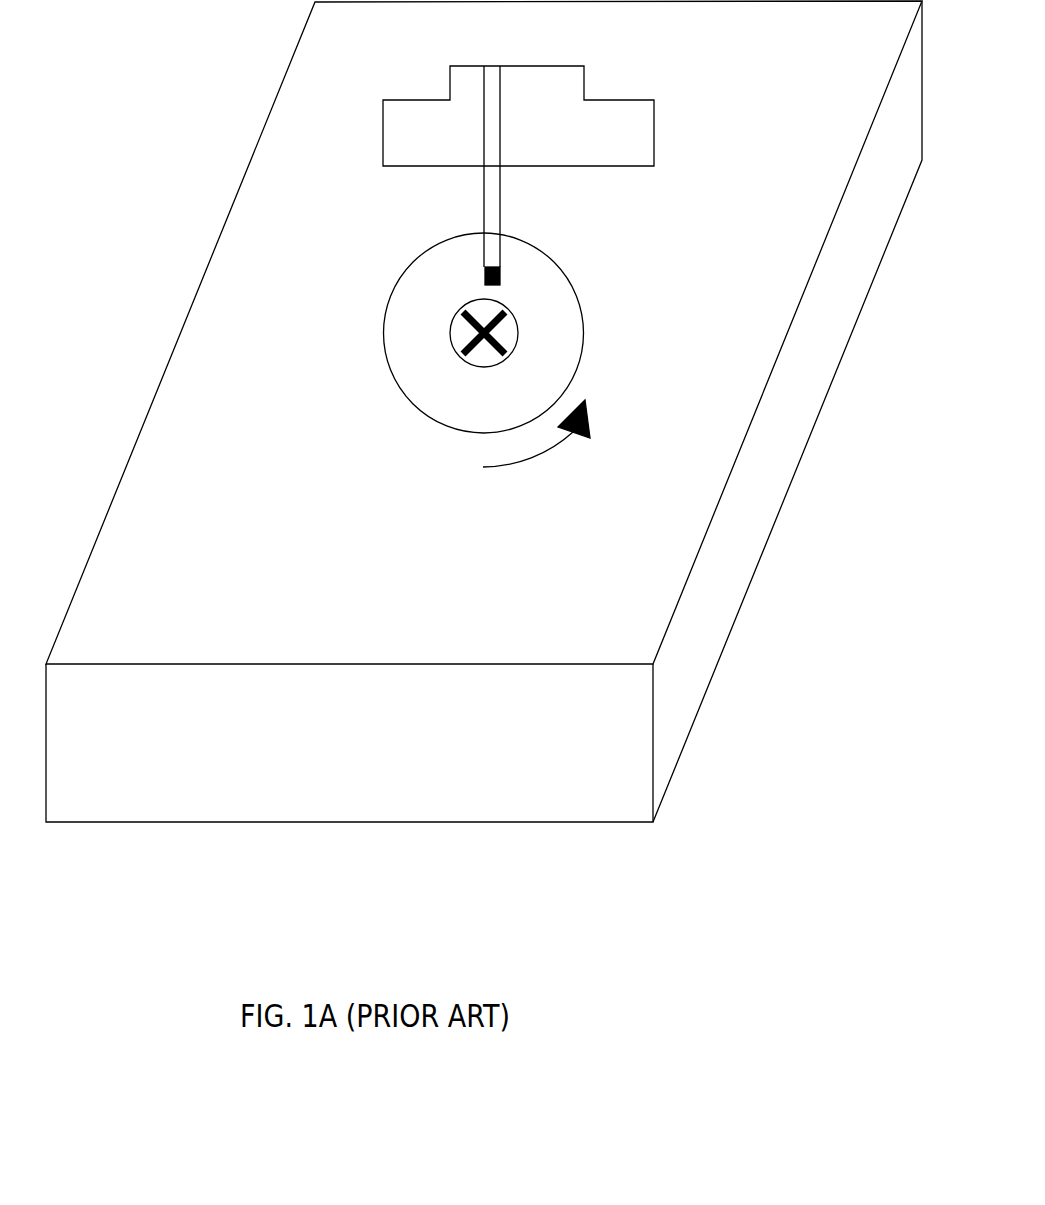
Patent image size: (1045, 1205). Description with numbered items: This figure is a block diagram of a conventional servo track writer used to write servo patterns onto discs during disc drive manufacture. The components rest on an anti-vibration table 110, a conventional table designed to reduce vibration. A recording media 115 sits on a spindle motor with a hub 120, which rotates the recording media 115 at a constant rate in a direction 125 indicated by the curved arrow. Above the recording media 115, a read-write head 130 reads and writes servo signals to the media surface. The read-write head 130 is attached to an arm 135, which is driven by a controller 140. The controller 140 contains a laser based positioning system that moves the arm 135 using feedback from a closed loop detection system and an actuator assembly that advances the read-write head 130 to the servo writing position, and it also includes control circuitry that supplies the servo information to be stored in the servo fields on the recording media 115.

The anti-vibration table 110 is at (653, 729).
The recording media 115 is at (586, 330).
The spindle motor with a hub 120 is at (460, 353).
The direction 125 is at (538, 455).
The read-write head 130 is at (503, 270).
The arm 135 is at (500, 199).
The controller 140 is at (654, 132).